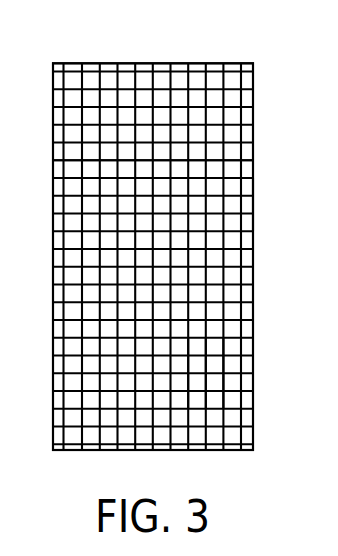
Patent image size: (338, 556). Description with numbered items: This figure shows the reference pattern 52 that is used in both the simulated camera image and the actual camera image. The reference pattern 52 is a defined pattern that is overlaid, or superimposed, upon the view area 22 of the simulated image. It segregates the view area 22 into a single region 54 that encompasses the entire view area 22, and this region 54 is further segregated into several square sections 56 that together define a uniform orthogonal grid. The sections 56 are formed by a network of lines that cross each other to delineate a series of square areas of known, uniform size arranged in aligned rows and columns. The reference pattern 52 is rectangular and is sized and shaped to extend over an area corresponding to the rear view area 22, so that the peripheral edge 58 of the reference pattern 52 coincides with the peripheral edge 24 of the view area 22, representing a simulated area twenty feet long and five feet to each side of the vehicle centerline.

The reference pattern 52 is at (71, 42).
The view area 22 is at (233, 168).
The peripheral edge of the reference pattern 58 is at (254, 205).
The region 54 is at (254, 256).
The sections 56 is at (193, 402).
The peripheral edge of the view area 24 is at (254, 416).